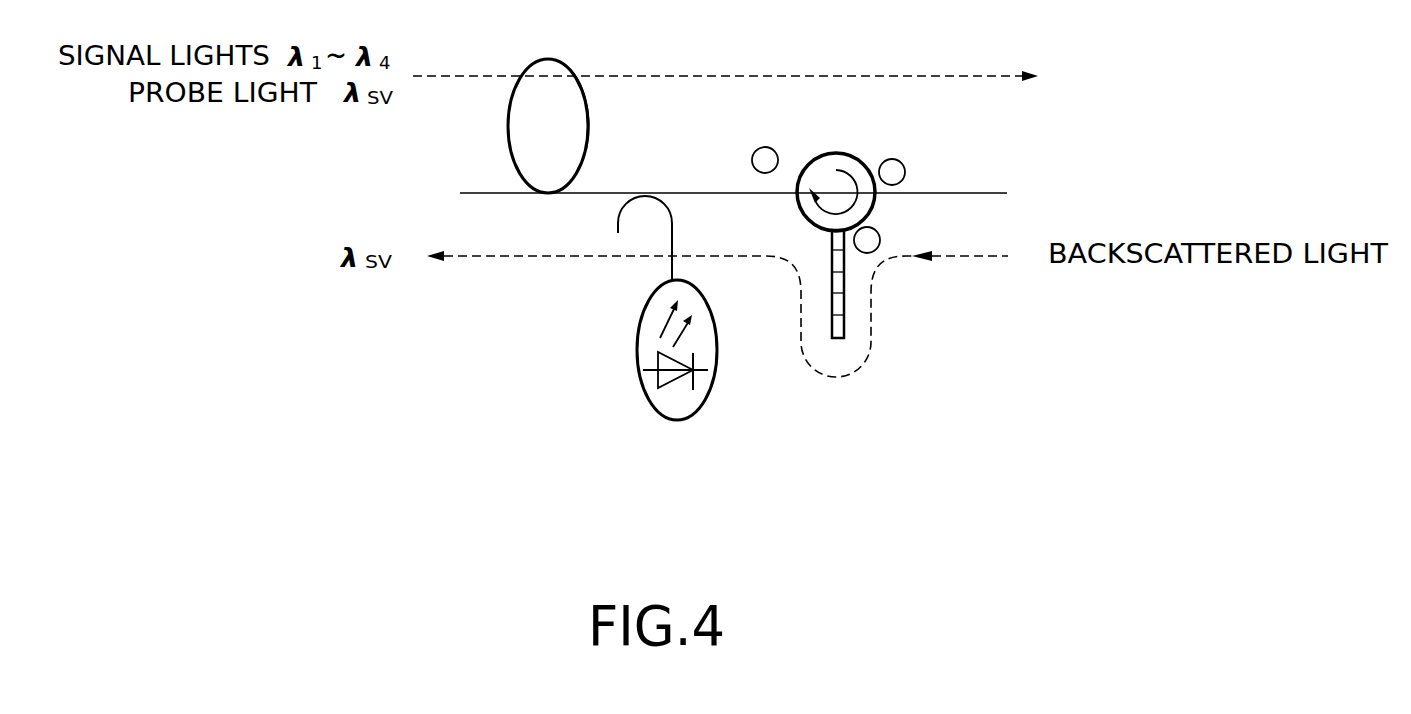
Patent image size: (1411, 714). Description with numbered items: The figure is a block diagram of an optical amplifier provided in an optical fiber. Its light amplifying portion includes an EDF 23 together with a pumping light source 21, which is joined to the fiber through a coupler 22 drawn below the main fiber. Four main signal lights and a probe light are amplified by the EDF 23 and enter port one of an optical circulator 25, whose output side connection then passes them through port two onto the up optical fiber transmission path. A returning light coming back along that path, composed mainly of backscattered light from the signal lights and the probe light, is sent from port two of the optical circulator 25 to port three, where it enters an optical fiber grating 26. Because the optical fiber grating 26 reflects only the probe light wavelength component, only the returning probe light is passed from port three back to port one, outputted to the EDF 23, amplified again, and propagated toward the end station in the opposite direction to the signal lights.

The pumping light source 21 is at (637, 352).
The optical coupler 22 is at (618, 224).
The EDF 23 is at (567, 64).
The optical circulator 25 is at (803, 216).
The optical fiber grating 26 is at (847, 303).